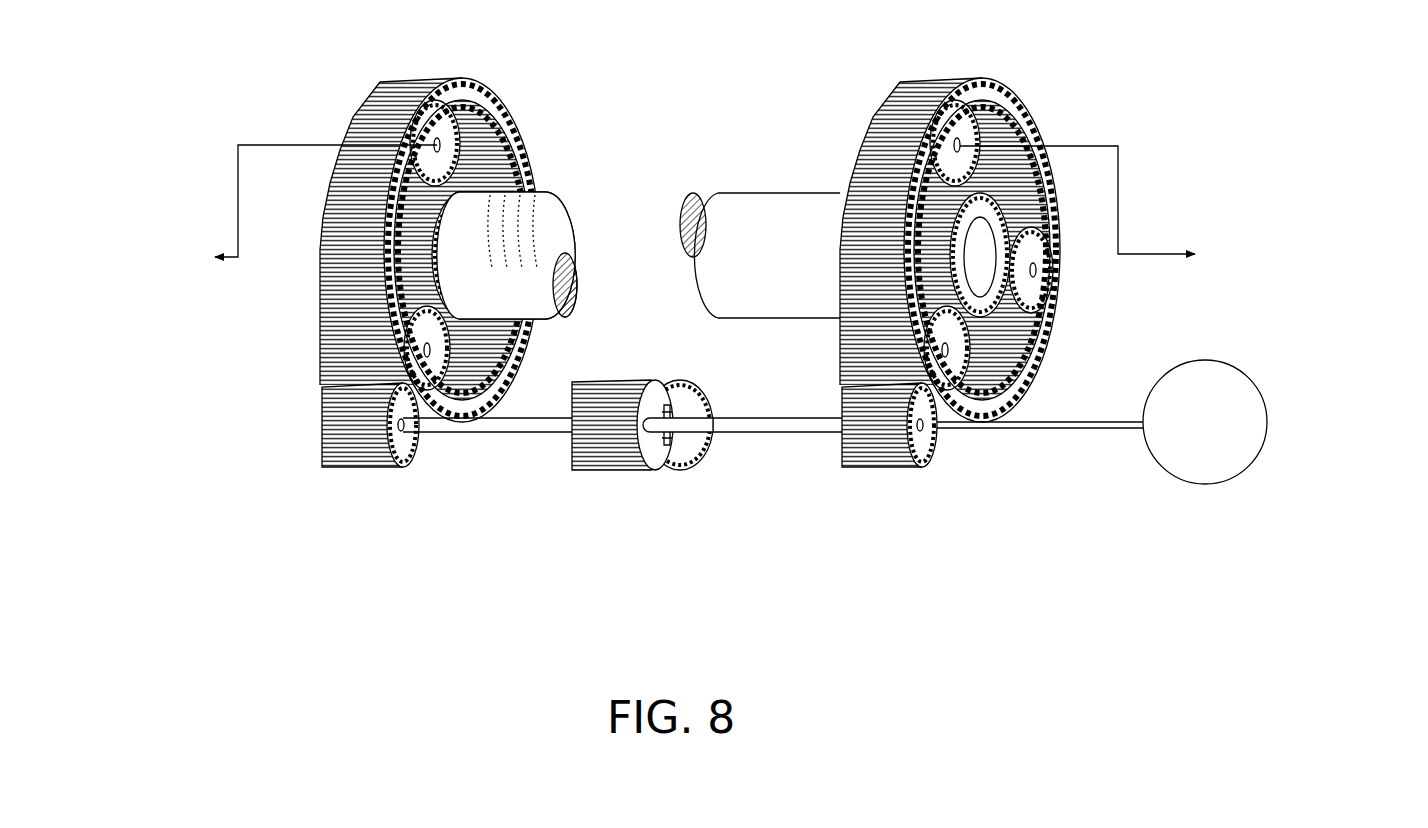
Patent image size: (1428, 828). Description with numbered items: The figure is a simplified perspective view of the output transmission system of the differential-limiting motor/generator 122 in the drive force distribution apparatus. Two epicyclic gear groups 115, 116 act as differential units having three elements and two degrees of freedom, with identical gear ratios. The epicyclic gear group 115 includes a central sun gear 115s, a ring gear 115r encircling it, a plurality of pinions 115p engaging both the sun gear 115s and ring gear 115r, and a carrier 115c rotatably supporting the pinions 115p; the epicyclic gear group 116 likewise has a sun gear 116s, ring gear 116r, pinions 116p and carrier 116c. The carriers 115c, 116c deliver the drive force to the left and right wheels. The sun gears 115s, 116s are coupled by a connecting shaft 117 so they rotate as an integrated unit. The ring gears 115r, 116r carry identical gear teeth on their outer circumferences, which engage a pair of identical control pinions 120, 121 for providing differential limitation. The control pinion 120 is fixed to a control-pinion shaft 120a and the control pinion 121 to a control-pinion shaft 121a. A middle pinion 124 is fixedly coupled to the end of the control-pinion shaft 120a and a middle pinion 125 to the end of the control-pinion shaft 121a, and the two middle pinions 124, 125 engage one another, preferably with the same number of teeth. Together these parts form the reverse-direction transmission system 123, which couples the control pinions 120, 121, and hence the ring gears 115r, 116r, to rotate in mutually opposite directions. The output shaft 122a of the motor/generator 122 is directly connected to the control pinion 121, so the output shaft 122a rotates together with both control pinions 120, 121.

The epicyclic gear group 115 is at (327, 213).
The ring gear 115r is at (470, 80).
The pinions (planet gears) 115p is at (433, 140).
The sun gear 115s is at (417, 293).
The carrier 115c is at (297, 143).
The epicyclic gear group 116 is at (1086, 233).
The ring gear 116r is at (1010, 98).
The pinions (planet gears) 116p is at (998, 115).
The sun gear 116s is at (1055, 345).
The carrier 116c is at (1100, 142).
The connecting shaft 117 is at (700, 193).
The control pinion 120 is at (362, 468).
The control-pinion shaft 120a is at (518, 434).
The control pinion 121 is at (889, 460).
The control-pinion shaft 121a is at (773, 432).
The motor/generator 122 is at (1208, 485).
The output shaft 122a is at (1065, 430).
The reverse-direction transmission system 123 is at (667, 480).
The middle pinion 124 is at (620, 380).
The middle pinion 125 is at (708, 462).